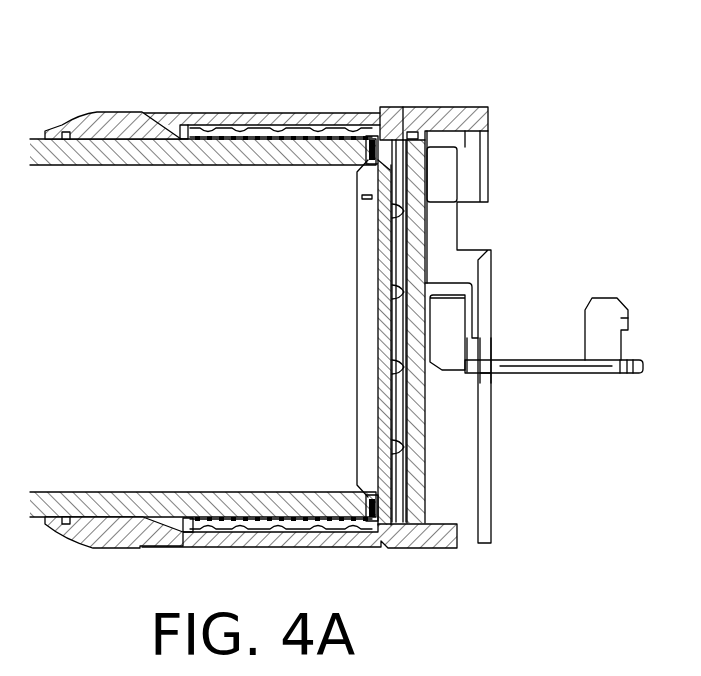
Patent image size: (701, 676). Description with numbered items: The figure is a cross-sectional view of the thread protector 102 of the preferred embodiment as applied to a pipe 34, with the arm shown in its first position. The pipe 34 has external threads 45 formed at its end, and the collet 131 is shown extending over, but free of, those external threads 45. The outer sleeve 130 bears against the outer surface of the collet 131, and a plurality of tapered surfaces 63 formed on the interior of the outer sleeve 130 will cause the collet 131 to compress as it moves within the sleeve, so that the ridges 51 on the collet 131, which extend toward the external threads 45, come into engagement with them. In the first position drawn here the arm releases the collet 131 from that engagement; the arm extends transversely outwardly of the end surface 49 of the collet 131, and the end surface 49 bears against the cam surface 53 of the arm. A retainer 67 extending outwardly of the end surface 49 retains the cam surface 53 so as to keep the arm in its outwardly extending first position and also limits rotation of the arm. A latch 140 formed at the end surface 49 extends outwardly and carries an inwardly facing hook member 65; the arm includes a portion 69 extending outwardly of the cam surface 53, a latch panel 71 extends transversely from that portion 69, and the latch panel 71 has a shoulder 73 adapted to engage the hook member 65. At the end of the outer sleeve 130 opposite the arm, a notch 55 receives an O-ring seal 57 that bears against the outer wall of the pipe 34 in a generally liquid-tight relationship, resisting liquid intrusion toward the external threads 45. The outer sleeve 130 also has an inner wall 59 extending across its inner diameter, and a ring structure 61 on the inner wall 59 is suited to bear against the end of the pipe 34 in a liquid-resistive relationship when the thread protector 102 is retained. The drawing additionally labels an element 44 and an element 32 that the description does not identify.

The thread protector 102 is at (348, 48).
The pipe 34 is at (88, 160).
The collet 131 is at (232, 126).
The tapered surfaces 63 is at (200, 116).
The ridges 51 is at (272, 128).
The O-ring seal 57 is at (64, 132).
The latch 44 is at (370, 150).
The outer sleeve 130 is at (382, 107).
The latch 140 is at (446, 107).
The end surface 49 is at (425, 192).
The hook member 65 is at (472, 148).
The retainer 67 is at (436, 282).
The inner wall 59 is at (368, 283).
The cam surface 53 is at (460, 333).
The circuit board 32 is at (538, 362).
The portion 69 is at (572, 373).
The latch panel 71 is at (603, 302).
The shoulder 73 is at (630, 325).
The external threads 45 is at (236, 492).
The ring structure 61 is at (365, 488).
The notch 55 is at (64, 535).